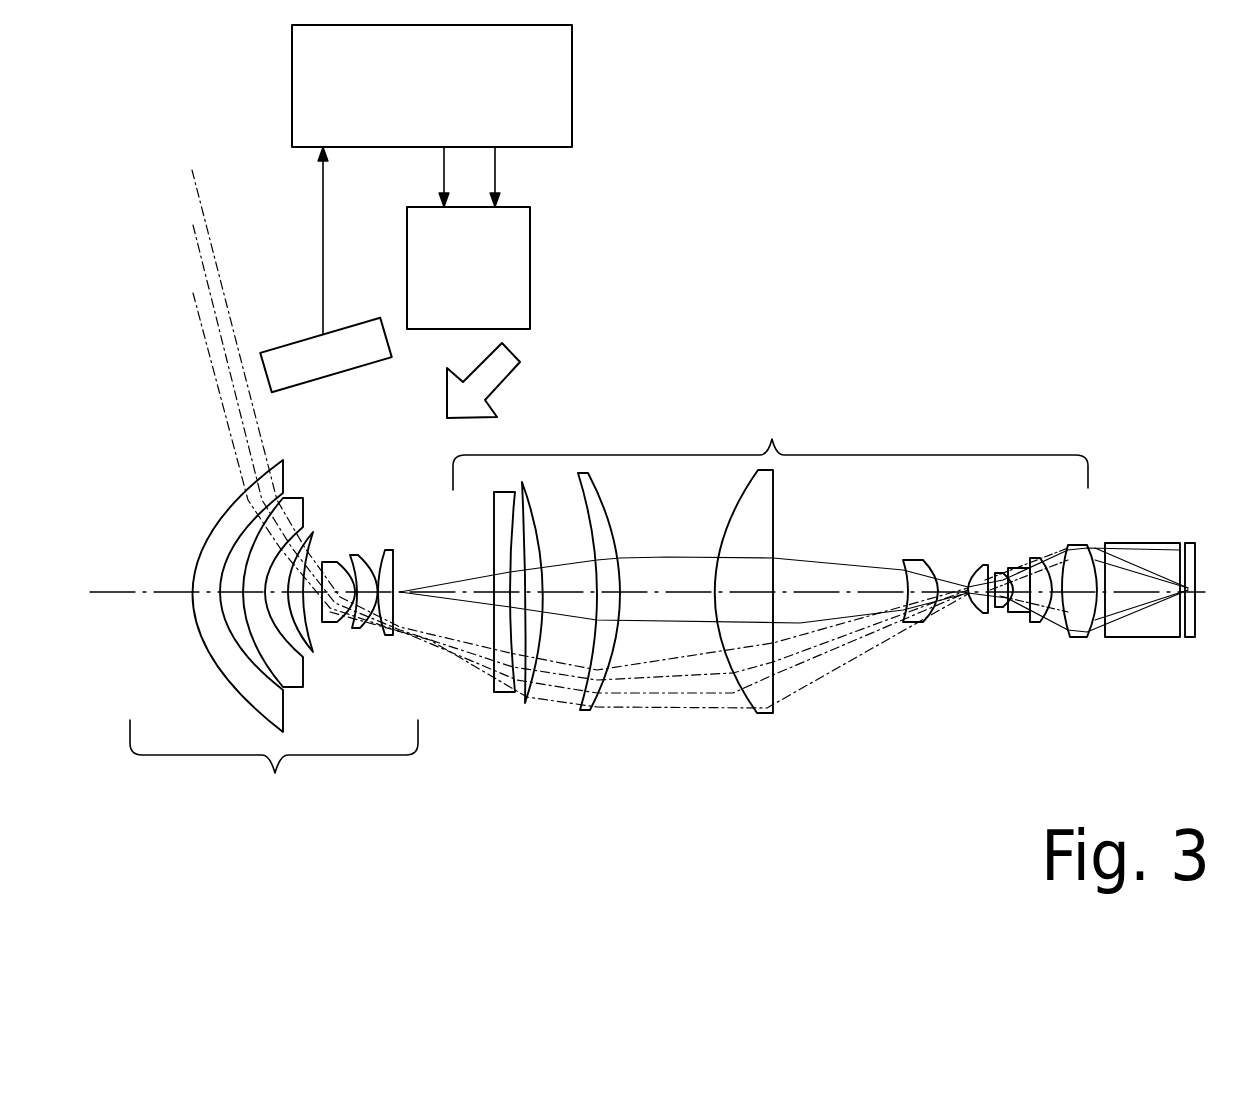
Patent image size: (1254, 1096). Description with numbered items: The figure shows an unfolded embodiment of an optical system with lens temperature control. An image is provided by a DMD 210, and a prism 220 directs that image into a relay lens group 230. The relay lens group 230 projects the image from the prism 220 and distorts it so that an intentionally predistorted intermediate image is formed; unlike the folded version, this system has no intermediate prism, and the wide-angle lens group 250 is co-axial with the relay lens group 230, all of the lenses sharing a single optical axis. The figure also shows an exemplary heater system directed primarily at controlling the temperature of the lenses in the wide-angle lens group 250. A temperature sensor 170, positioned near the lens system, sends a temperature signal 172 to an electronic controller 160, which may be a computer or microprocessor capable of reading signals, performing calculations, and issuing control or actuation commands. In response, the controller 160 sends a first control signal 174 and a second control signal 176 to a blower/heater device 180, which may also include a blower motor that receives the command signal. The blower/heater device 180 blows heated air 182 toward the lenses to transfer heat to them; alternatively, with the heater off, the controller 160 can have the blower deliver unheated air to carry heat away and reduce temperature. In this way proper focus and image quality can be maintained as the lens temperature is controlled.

The electronic controller 160 is at (432, 86).
The temperature sensor 170 is at (348, 370).
The temperature signal 172 is at (322, 265).
The first control signal 174 is at (443, 177).
The second control signal 176 is at (497, 163).
The blower/heater device 180 is at (530, 228).
The heated air 182 is at (500, 368).
The DMD 210 is at (1192, 543).
The prism 220 is at (1135, 640).
The relay lens group 230 is at (775, 540).
The wide-angle lens group 250 is at (274, 658).